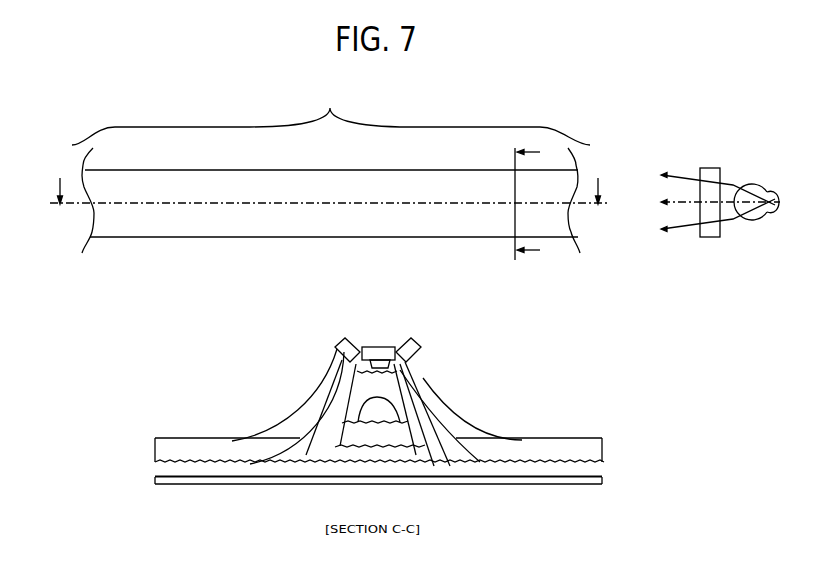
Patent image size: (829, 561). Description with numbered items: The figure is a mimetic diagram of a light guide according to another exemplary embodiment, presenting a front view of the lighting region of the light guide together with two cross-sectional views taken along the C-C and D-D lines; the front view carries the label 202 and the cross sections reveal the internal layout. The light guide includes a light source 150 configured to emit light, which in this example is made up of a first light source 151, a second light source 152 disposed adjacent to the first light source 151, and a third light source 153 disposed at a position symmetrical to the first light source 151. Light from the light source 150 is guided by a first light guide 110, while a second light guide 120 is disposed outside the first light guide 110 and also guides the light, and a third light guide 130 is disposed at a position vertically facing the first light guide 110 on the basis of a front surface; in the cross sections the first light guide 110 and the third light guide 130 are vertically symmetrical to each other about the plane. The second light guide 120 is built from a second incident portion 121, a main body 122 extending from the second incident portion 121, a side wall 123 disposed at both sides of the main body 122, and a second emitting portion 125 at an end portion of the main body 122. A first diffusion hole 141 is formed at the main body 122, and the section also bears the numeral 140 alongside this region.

The display panel 202 is at (63, 113).
The first light guide 110 is at (752, 179).
The second light guide 120 is at (585, 340).
The second incident portion 121 is at (435, 375).
The main body 122 is at (392, 430).
The side wall 123 is at (413, 413).
The second emitting portion 125 is at (313, 463).
The third light guide 130 is at (323, 370).
The elastic member 140 is at (328, 434).
The first diffusion hole 141 is at (346, 403).
The light source 150 is at (412, 300).
The first light source 151 is at (410, 342).
The second light source 152 is at (380, 346).
The third light source 153 is at (345, 340).